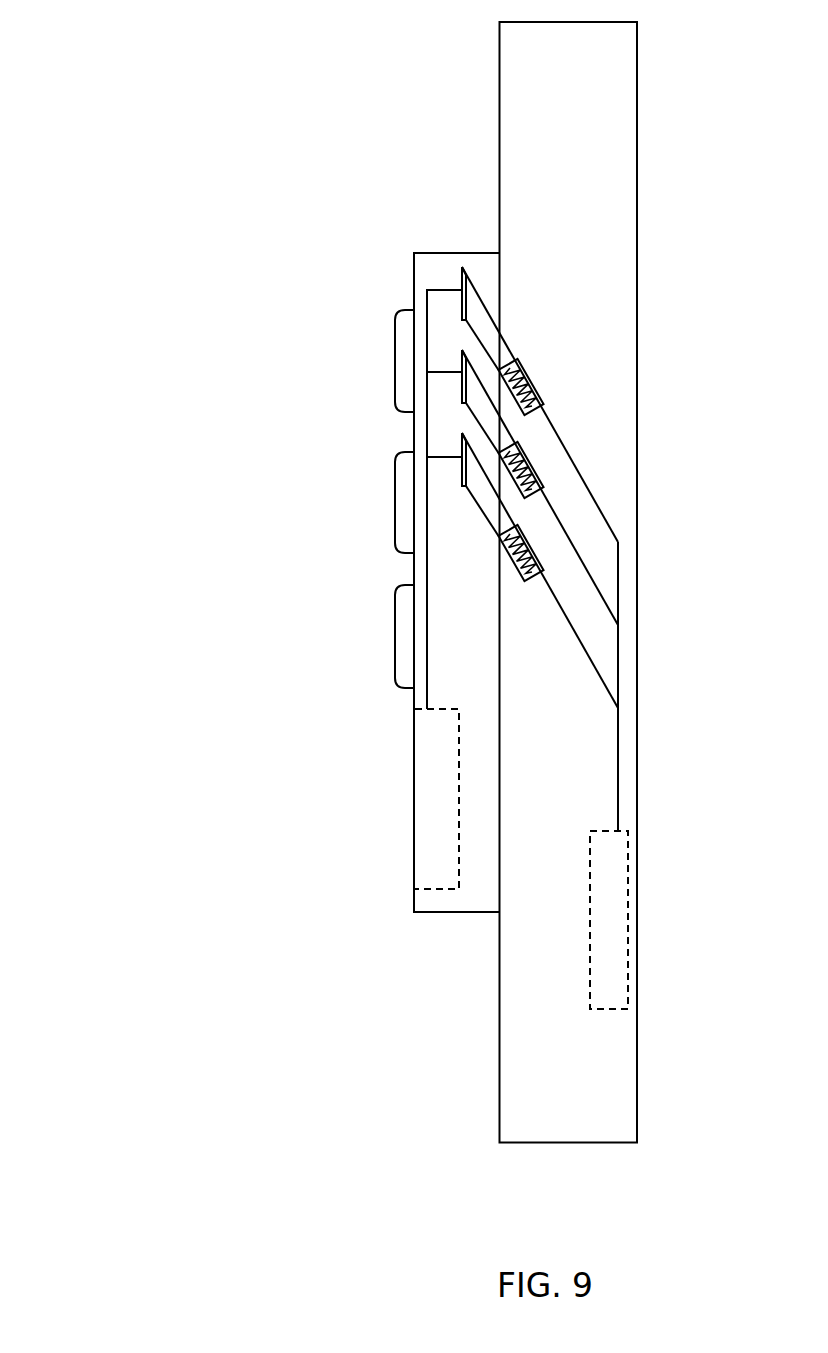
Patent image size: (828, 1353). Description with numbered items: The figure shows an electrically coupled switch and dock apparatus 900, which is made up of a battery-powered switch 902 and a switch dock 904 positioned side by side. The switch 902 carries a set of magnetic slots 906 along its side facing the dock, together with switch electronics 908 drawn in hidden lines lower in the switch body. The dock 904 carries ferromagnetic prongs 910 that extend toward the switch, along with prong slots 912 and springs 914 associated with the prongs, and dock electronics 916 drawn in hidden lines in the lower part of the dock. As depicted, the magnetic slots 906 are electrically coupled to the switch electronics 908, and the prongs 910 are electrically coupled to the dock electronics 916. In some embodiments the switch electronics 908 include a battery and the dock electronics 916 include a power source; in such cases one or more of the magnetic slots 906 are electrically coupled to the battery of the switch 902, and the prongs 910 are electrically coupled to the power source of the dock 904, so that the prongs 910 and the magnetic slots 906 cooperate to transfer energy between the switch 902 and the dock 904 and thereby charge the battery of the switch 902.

The apparatus 900 is at (188, 85).
The battery-powered switch 902 is at (490, 686).
The switch dock 904 is at (598, 1084).
The magnetic slots 906 is at (460, 273).
The switch electronics 908 is at (443, 889).
The ferromagnetic prongs 910 is at (495, 347).
The prong slots 912 is at (532, 373).
The springs 914 is at (545, 392).
The dock electronics 916 is at (591, 880).